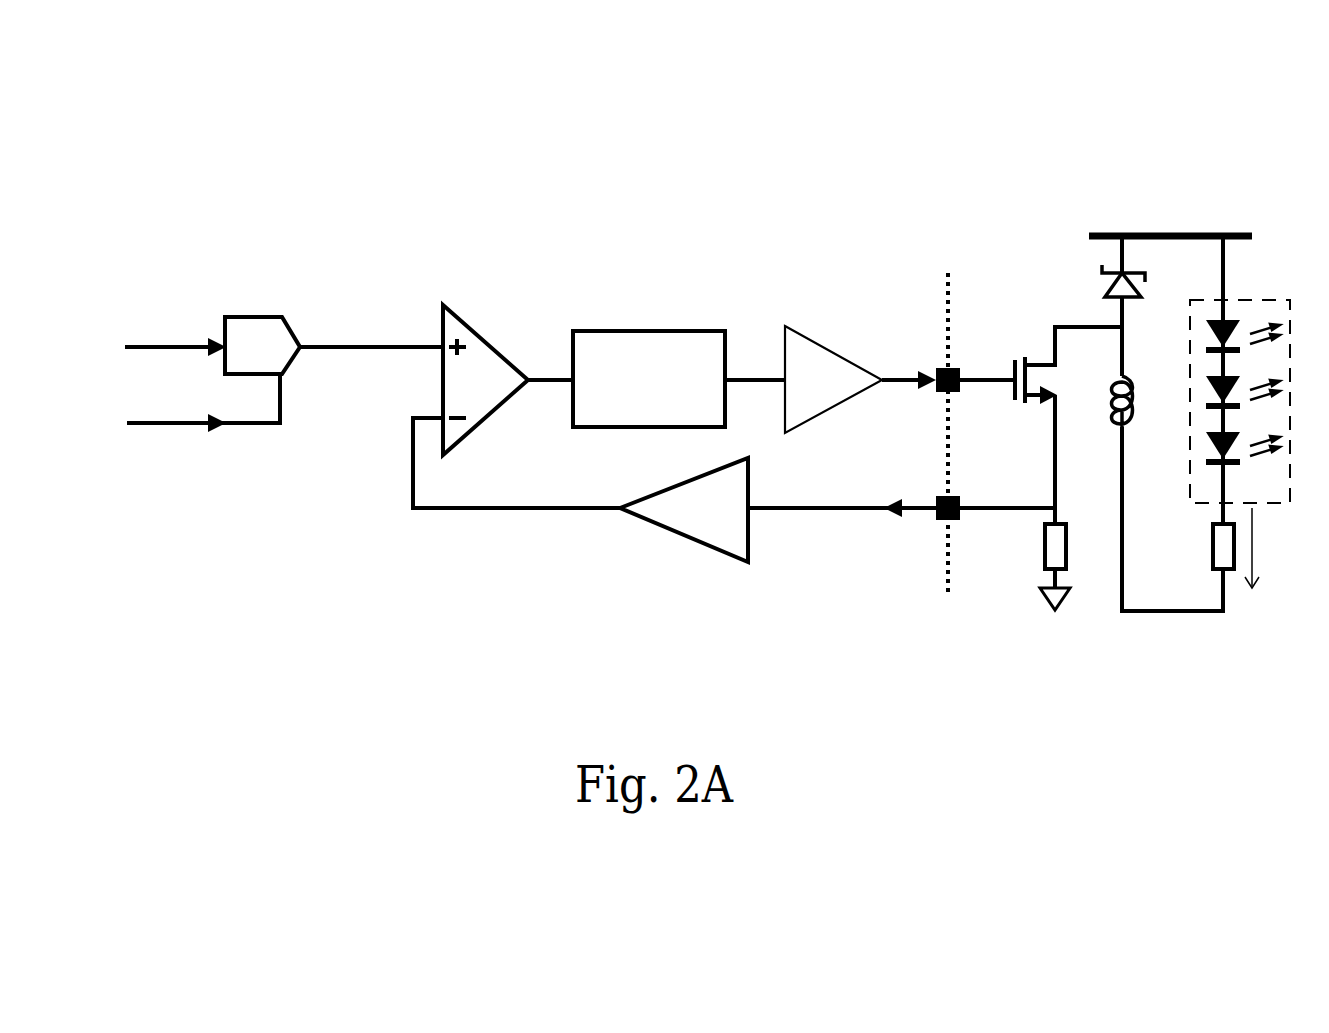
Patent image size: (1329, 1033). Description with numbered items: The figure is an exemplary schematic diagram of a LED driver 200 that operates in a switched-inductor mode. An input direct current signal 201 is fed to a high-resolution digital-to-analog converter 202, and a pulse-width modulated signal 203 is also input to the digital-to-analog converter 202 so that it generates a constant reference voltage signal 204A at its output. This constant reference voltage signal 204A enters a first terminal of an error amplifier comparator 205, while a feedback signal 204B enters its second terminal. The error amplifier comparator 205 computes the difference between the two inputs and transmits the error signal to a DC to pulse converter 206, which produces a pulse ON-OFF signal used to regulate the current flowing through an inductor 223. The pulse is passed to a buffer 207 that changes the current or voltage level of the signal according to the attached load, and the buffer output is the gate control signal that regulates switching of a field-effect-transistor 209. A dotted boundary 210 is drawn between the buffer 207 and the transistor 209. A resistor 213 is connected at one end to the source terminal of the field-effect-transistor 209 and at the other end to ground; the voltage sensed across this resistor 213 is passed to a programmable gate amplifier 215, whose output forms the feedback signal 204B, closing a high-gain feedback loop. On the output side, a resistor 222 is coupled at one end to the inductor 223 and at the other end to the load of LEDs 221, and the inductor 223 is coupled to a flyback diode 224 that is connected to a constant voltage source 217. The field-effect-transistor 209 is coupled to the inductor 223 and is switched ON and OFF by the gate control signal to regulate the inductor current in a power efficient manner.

The LED driver 200 is at (1014, 178).
The input direct current signal 201 is at (190, 340).
The digital-to-analog converter 202 is at (265, 318).
The pulse-width modulated signal 203 is at (255, 425).
The constant reference voltage signal 204A is at (412, 350).
The feedback signal 204B is at (490, 510).
The error amplifier comparator 205 is at (458, 312).
The DC to pulse converter 206 is at (613, 428).
The buffer 207 is at (800, 330).
The field-effect-transistor 209 is at (1025, 400).
The boundary line 210 is at (955, 297).
The resistor R_OC 213 is at (1068, 535).
The programmable gate amplifier 215 is at (688, 540).
The constant voltage source 217 is at (1185, 233).
The load (LEDs) 221 is at (1278, 300).
The resistor 222 is at (1212, 537).
The inductor 223 is at (1133, 410).
The flyback diode 224 is at (1143, 296).